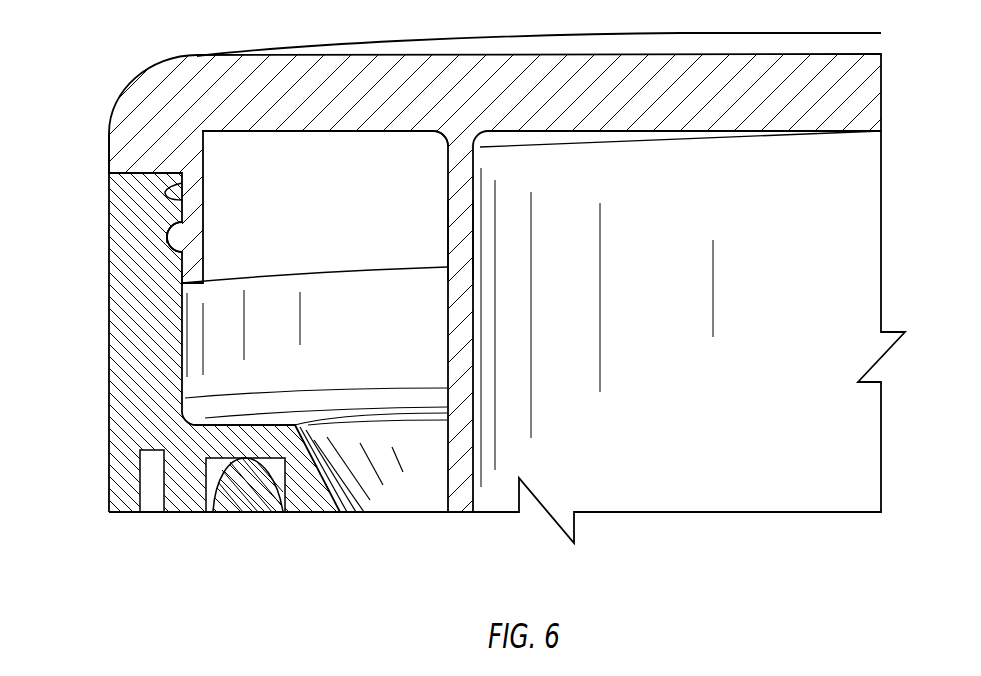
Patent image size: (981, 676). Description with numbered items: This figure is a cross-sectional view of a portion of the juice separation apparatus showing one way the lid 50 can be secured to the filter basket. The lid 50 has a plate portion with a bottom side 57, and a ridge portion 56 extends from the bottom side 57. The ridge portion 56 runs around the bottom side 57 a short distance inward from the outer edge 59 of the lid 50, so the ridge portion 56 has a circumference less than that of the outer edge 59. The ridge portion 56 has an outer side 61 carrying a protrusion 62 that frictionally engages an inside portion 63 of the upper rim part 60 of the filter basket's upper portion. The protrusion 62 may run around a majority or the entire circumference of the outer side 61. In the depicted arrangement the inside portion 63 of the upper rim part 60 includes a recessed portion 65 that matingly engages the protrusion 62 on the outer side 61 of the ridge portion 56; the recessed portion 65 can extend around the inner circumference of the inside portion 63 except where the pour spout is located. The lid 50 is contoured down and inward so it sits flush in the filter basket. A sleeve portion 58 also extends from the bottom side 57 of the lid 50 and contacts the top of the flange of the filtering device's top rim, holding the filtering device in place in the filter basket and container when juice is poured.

The lid 50 is at (157, 75).
The outer edge 59 is at (108, 133).
The upper rim part 60 is at (152, 173).
The outer side 61 is at (182, 183).
The ridge portion 56 is at (193, 213).
The protrusion 62 is at (173, 228).
The recessed portion 65 is at (167, 239).
The inside portion 63 is at (190, 268).
The bottom side 57 is at (397, 132).
The sleeve portion 58 is at (468, 237).